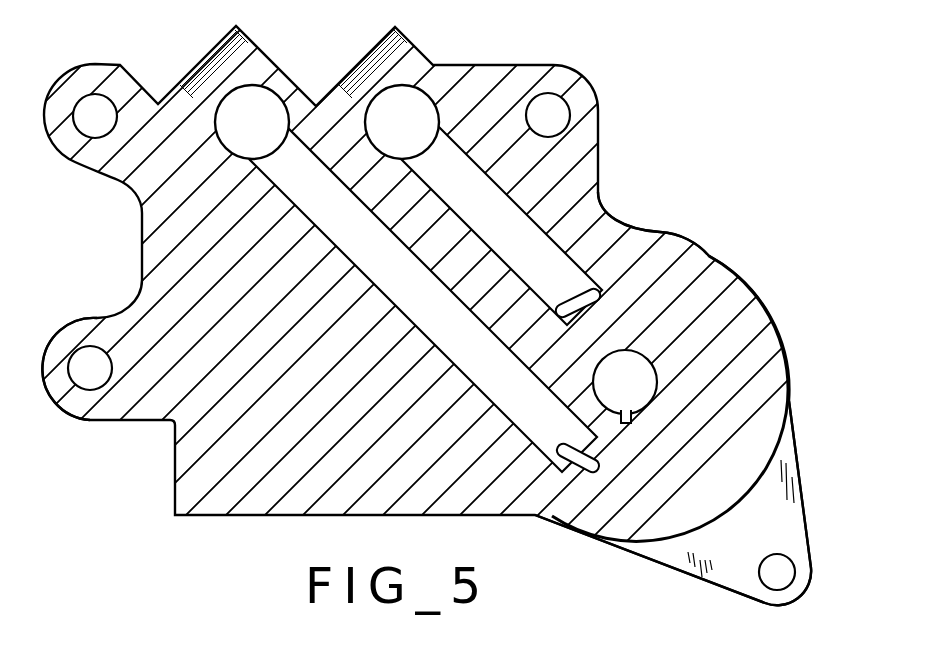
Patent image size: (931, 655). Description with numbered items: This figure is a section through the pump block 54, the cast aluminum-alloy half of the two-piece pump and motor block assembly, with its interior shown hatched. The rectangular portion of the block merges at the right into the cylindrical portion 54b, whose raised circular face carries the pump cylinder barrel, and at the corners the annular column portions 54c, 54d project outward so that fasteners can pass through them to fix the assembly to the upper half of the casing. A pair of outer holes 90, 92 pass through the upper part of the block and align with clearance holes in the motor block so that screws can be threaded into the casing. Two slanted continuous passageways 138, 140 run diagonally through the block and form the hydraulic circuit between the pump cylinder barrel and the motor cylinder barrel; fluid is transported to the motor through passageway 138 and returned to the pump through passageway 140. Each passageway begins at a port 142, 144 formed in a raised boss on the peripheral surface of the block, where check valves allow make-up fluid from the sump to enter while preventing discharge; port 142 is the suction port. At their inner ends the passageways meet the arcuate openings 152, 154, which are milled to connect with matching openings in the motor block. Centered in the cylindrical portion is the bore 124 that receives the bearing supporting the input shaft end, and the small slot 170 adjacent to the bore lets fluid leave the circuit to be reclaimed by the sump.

The pump block 54 is at (619, 100).
The cylindrical portion 54b is at (745, 281).
The annular column portion 54c is at (811, 572).
The annular column portion 54d is at (69, 419).
The outer hole 90 is at (101, 100).
The outer hole 92 is at (559, 100).
The bore 124 is at (665, 386).
The continuous passageway 138 is at (413, 303).
The continuous passageway 140 is at (538, 256).
The port 142 is at (422, 98).
The port 144 is at (268, 98).
The arcuate opening 152 is at (578, 466).
The arcuate opening 154 is at (660, 232).
The slot 170 is at (640, 419).